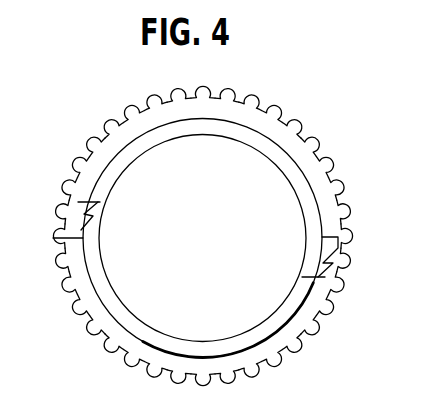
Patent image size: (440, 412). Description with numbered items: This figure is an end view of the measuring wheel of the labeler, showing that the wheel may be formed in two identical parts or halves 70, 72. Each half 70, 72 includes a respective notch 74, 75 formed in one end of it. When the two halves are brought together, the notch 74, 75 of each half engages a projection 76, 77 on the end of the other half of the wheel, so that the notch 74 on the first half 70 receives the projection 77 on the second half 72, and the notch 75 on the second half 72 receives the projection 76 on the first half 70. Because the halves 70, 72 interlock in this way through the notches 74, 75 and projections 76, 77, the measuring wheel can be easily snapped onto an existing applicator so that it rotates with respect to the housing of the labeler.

The half of the measuring wheel 70 is at (225, 235).
The half of the measuring wheel 72 is at (324, 307).
The notch 74 is at (63, 167).
The notch 75 is at (337, 276).
The projection 76 is at (92, 203).
The projection 77 is at (308, 262).